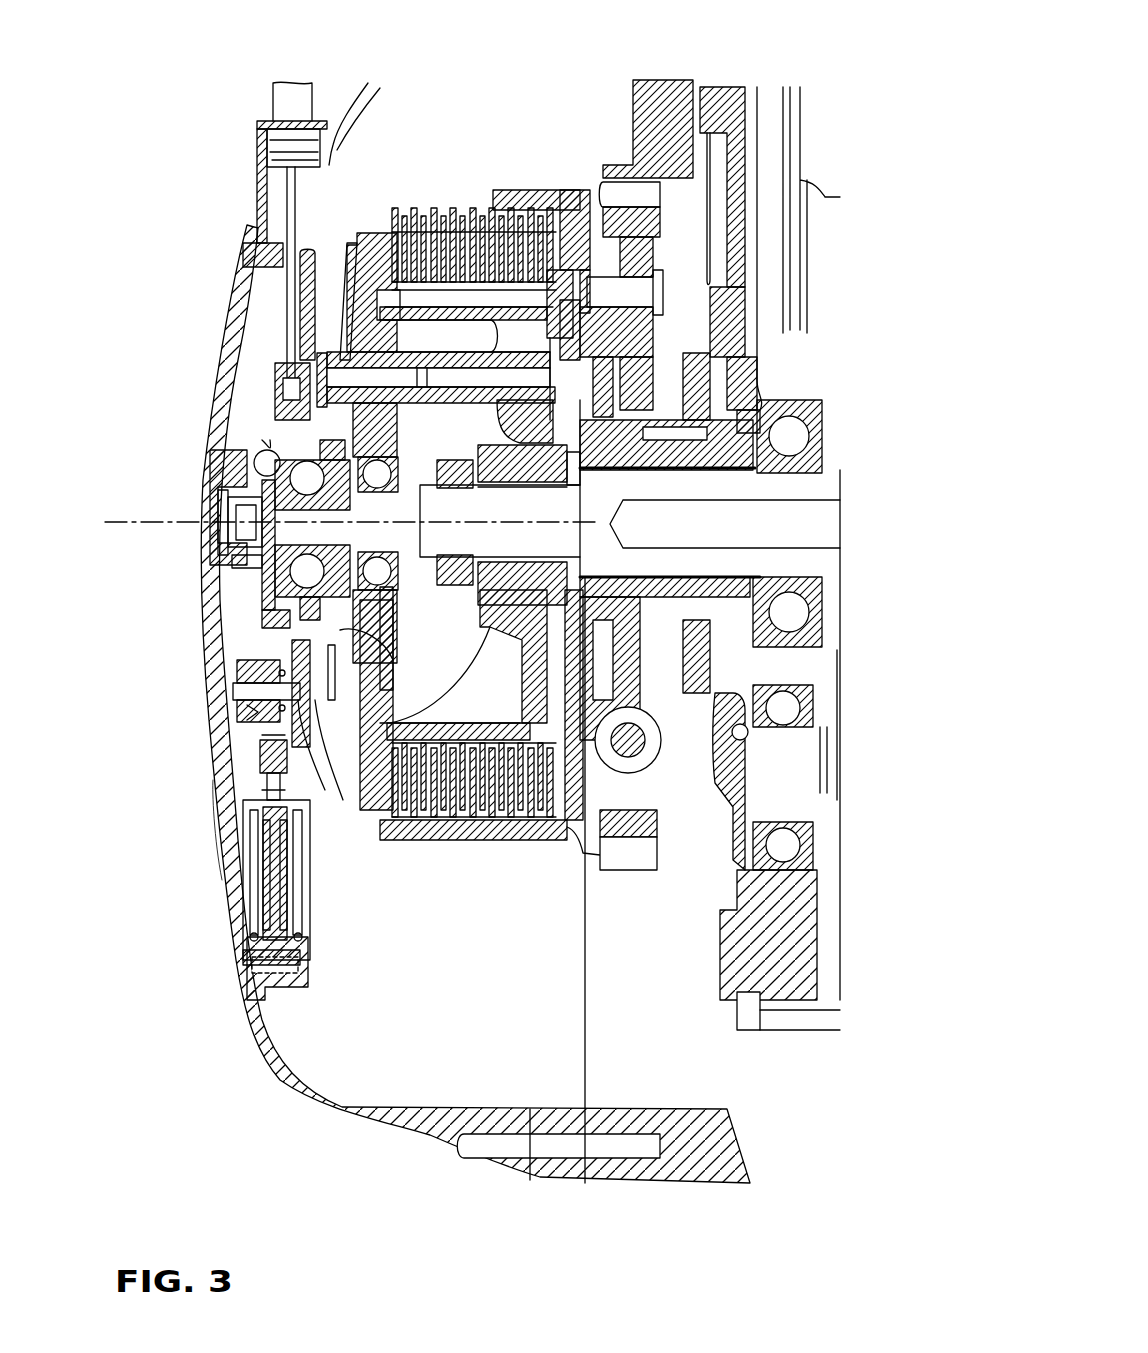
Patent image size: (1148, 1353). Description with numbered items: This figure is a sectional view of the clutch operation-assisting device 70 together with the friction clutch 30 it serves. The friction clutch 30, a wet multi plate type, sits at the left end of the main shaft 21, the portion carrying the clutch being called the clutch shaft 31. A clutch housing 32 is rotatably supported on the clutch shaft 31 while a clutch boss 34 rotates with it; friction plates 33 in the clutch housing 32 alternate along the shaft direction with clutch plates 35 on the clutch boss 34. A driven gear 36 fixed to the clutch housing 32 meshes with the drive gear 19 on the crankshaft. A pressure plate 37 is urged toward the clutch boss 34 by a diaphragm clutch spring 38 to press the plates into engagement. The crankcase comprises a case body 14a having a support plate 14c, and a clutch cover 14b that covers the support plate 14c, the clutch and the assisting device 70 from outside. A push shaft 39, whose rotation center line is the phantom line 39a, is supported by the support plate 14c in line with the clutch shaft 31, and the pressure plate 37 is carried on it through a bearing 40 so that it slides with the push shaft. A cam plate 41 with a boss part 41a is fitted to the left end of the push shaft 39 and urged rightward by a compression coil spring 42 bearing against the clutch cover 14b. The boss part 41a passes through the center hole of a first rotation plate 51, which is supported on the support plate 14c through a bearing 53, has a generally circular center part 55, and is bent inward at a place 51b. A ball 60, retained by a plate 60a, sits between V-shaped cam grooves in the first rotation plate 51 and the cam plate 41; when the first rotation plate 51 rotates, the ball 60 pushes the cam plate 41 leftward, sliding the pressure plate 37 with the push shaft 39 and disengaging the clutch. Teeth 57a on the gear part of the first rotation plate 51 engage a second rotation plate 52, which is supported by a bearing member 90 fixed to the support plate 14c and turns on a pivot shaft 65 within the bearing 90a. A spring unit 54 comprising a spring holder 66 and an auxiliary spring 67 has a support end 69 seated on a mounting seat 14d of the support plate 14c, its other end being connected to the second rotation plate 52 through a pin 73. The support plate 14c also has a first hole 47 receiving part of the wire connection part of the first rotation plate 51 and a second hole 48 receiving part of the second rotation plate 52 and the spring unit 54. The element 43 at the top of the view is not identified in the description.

The case body 14a is at (252, 1042).
The clutch cover 14b is at (214, 838).
The support plate 14c is at (305, 318).
The mounting seat 14d is at (297, 995).
The drive gear 19 is at (703, 88).
The main shaft 21 is at (790, 515).
The friction clutch 30 is at (458, 84).
The clutch shaft 31 is at (455, 580).
The clutch housing 32 is at (497, 190).
The friction plates 33 is at (435, 208).
The clutch boss 34 is at (516, 300).
The clutch plates 35 is at (465, 210).
The driven gear 36 is at (627, 190).
The pressure plate 37 is at (372, 233).
The clutch spring 38 is at (340, 290).
The push shaft 39 is at (257, 522).
The phantom line 39a is at (132, 520).
The bearing 40 is at (380, 473).
The cam plate 41 is at (250, 590).
The boss part 41a is at (334, 600).
The compression coil spring 42 is at (222, 468).
The stud 43 is at (282, 97).
The first hole 47 is at (322, 350).
The second hole 48 is at (302, 790).
The first rotation plate 51 is at (285, 655).
The bent place 51b is at (278, 694).
The second rotation plate 52 is at (332, 675).
The bearing 53 is at (326, 455).
The spring unit 54 is at (232, 886).
The center part 55 is at (278, 563).
The teeth 57a is at (378, 636).
The ball 60 is at (263, 452).
The plate 60a is at (268, 620).
The pivot shaft 65 is at (302, 788).
The spring holder 66 is at (270, 895).
The auxiliary spring 67 is at (300, 913).
The support end 69 is at (240, 975).
The clutch operation-assisting device 70 is at (247, 363).
The pin 73 is at (262, 795).
The bearing member 90 is at (260, 748).
The bearing 90a is at (248, 712).